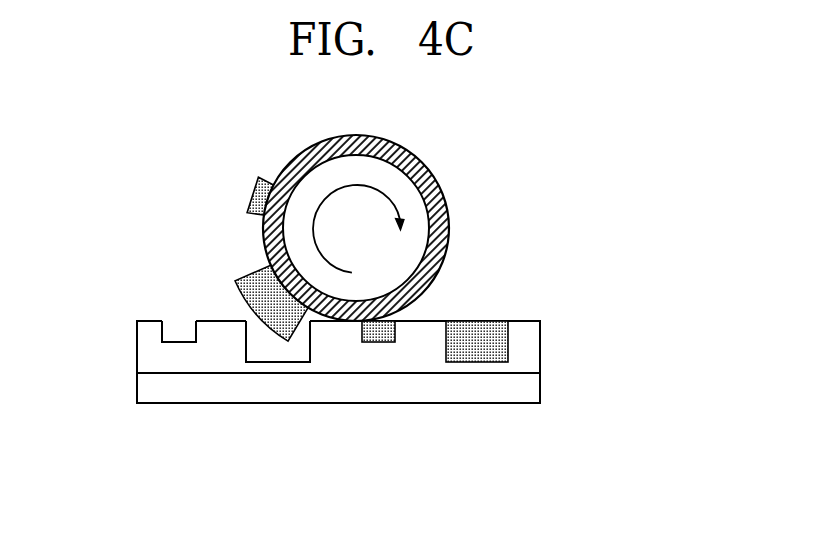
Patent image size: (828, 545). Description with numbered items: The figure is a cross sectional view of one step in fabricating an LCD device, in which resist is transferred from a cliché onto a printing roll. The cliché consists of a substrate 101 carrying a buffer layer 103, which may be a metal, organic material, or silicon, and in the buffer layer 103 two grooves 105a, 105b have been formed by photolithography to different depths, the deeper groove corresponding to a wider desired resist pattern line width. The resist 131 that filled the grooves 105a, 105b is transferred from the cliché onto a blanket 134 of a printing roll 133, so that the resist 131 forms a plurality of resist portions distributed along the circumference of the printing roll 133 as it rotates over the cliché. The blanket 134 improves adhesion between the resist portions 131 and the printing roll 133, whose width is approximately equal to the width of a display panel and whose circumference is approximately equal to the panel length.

The substrate 101 is at (533, 388).
The buffer layer 103 is at (533, 350).
The groove 105a is at (180, 330).
The groove 105b is at (278, 352).
The resist 131 is at (247, 195).
The printing roll 133 is at (423, 236).
The blanket 134 is at (440, 200).